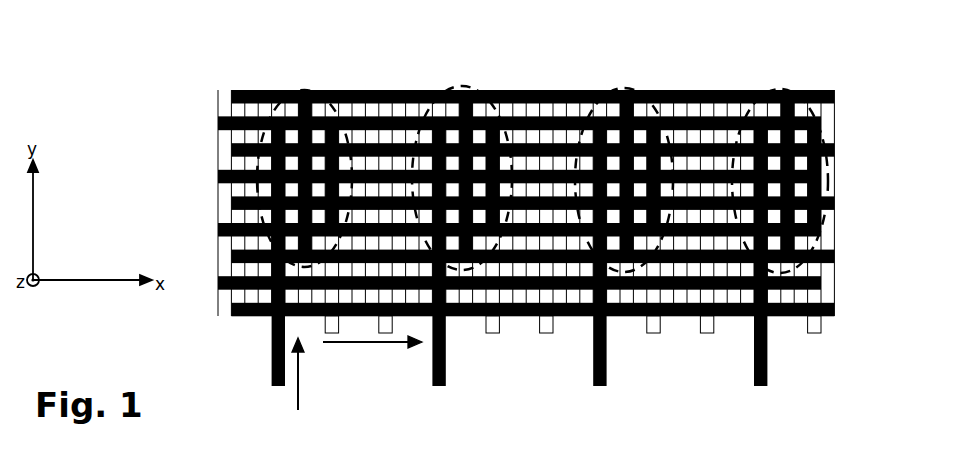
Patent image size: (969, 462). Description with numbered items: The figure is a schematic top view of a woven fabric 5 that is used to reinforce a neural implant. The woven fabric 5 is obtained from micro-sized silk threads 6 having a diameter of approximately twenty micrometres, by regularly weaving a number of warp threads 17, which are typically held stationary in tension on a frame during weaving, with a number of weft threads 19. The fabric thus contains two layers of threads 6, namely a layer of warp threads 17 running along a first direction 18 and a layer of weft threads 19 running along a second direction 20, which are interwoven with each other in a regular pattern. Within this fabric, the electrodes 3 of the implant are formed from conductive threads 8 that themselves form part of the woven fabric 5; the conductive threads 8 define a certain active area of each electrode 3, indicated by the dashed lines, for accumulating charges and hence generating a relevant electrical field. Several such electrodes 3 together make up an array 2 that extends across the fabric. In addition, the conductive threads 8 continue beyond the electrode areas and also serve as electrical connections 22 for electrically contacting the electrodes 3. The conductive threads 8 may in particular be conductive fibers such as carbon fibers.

The array 2 is at (248, 82).
The electrode 3 is at (258, 100).
The woven fabric 5 is at (218, 120).
The thread 6 is at (461, 183).
The conductive thread 8 is at (298, 90).
The warp thread 17 is at (350, 93).
The first direction 18 is at (300, 383).
The weft thread 19 is at (222, 178).
The second direction 20 is at (365, 343).
The electrical connection 22 is at (272, 382).